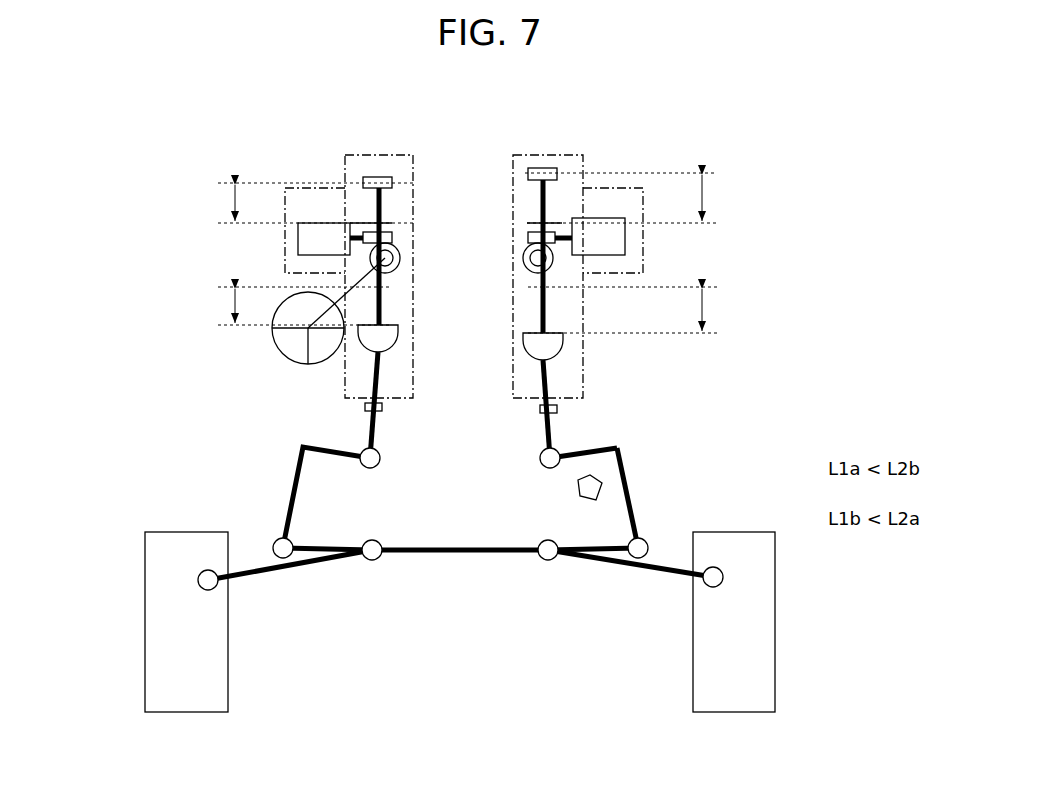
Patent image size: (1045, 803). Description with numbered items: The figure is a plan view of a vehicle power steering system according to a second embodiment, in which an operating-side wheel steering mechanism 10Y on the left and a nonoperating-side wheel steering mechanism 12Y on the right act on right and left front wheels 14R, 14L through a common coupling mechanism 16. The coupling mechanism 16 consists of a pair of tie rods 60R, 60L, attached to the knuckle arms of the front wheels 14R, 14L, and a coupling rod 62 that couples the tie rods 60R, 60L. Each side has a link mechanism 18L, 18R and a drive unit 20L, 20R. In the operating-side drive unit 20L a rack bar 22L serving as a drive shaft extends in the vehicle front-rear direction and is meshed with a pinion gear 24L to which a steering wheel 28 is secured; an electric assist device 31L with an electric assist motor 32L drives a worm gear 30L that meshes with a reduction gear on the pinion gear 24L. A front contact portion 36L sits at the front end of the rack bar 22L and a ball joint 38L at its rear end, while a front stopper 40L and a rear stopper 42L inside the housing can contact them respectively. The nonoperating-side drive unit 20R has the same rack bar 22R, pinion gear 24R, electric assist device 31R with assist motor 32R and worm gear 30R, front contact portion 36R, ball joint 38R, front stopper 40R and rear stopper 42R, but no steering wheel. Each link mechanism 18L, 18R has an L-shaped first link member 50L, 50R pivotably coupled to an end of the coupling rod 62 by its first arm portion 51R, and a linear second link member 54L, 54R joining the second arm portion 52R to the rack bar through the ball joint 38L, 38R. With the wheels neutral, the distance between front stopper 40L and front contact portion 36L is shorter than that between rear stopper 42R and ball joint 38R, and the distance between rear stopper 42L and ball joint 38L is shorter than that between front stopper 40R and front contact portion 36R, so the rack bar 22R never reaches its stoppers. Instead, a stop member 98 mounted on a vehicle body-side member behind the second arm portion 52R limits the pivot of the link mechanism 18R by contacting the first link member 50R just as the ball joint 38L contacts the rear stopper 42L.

The operating-side wheel steering mechanism 10Y is at (163, 313).
The nonoperating-side wheel steering mechanism 12Y is at (787, 350).
The left front wheel 14L is at (165, 638).
The right front wheel 14R is at (763, 620).
The coupling mechanism 16 is at (527, 598).
The link mechanism 18L is at (212, 427).
The link mechanism 18R is at (697, 443).
The drive unit 20L is at (343, 140).
The drive unit 20R is at (727, 160).
The rack bar 22L is at (385, 198).
The rack bar 22R is at (547, 310).
The pinion gear 24L is at (400, 258).
The pinion gear 24R is at (523, 258).
The steering wheel 28 is at (278, 353).
The worm gear 30L is at (390, 227).
The worm gear 30R is at (528, 237).
The electric assist device 31L is at (357, 217).
The electric assist device 31R is at (567, 213).
The electric assist motor 32L is at (303, 228).
The electric assist motor 32R is at (612, 238).
The front contact portion 36L is at (373, 177).
The front contact portion 36R is at (542, 168).
The ball joint 38L is at (387, 337).
The ball joint 38R is at (557, 345).
The front stopper 40L is at (370, 220).
The front stopper 40R is at (538, 220).
The rear stopper 42L is at (370, 272).
The rear stopper 42R is at (613, 230).
The first link member 50L is at (285, 497).
The first link member 50R is at (627, 453).
The first arm portion 51R is at (635, 508).
The second arm portion 52R is at (585, 447).
The second link member 54L is at (367, 430).
The second link member 54R is at (547, 385).
The tie rod 60L is at (297, 567).
The tie rod 60R is at (632, 567).
The coupling rod 62 is at (463, 552).
The stop member 98 is at (572, 490).